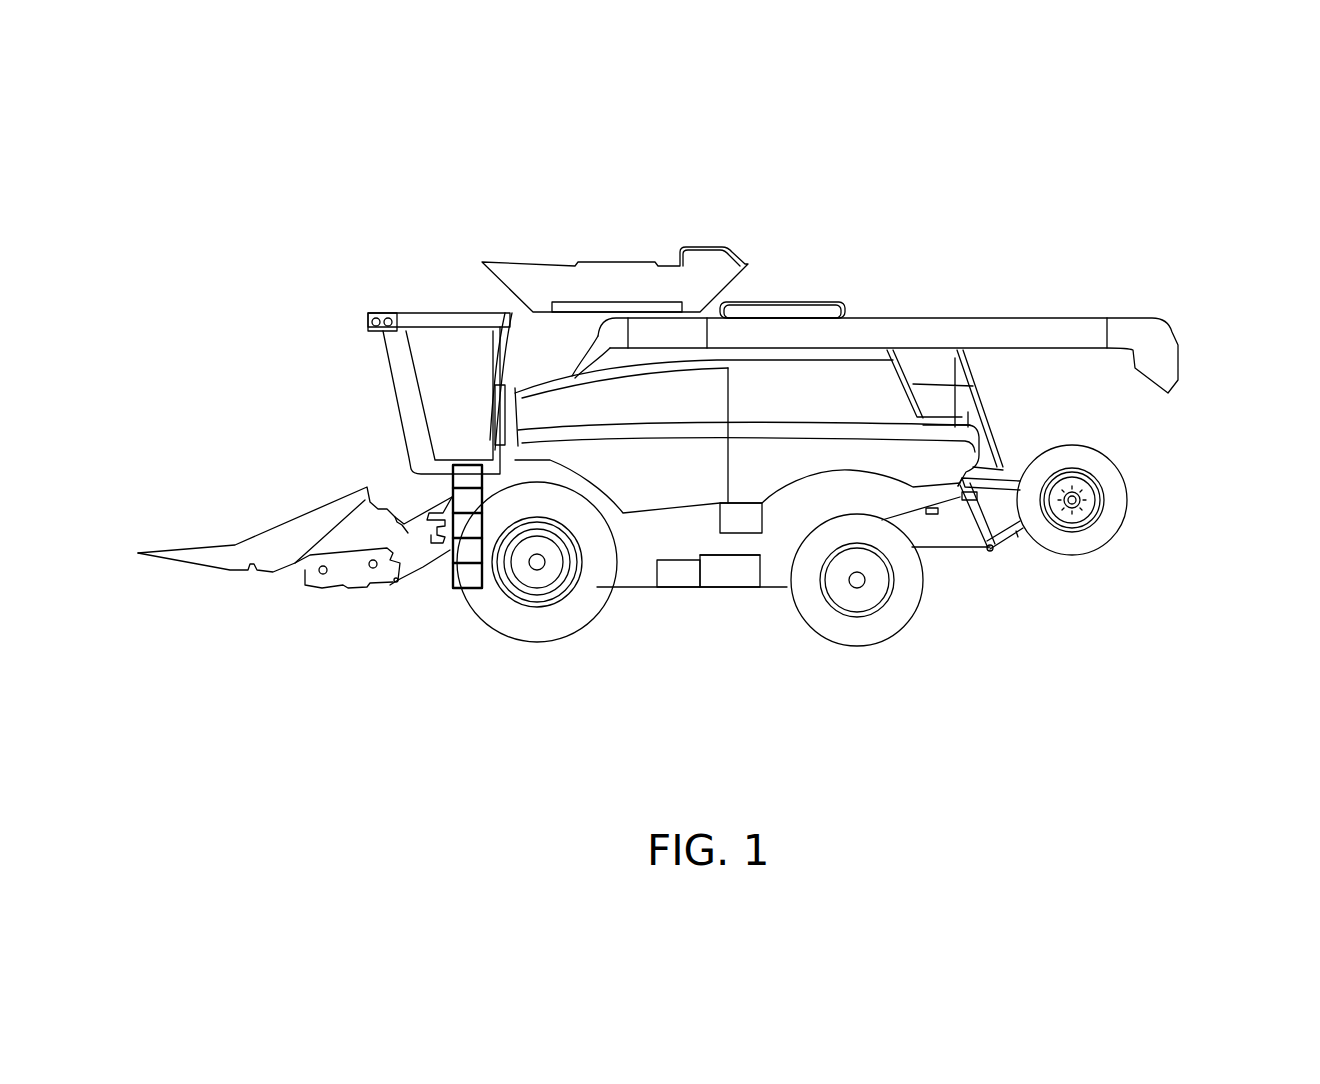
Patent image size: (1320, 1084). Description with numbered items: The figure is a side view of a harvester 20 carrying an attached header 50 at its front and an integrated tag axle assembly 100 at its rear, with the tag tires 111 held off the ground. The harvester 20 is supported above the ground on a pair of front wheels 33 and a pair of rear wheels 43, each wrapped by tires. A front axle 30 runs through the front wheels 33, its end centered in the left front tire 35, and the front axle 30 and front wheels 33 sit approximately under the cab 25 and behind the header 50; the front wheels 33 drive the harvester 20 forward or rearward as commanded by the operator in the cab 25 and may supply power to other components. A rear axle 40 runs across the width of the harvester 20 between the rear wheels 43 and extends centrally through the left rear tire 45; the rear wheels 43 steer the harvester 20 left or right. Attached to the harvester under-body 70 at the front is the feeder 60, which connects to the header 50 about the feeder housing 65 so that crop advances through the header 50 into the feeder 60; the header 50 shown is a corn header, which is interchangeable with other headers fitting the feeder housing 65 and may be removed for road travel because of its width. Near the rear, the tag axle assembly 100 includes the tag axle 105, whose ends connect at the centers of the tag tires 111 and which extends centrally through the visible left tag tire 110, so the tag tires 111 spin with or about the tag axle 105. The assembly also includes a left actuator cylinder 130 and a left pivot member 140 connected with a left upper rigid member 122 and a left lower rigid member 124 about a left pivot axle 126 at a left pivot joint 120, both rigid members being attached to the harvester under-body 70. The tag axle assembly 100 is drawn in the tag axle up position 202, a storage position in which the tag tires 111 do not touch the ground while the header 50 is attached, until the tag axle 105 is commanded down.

The harvester 20 is at (1068, 186).
The cab 25 is at (448, 348).
The front axle 30 is at (510, 598).
The front wheels 33 is at (527, 646).
The left front tire 35 is at (572, 617).
The rear axle 40 is at (857, 585).
The rear wheels 43 is at (831, 662).
The left rear tire 45 is at (817, 637).
The header 50 is at (410, 612).
The feeder 60 is at (331, 500).
The feeder housing 65 is at (408, 532).
The harvester under-body 70 is at (732, 588).
The tag axle assembly 100 is at (1088, 579).
The tag axle 105 is at (1082, 506).
The left tag tire 110 is at (1146, 484).
The tag tires 111 is at (1098, 467).
The left pivot joint 120 is at (985, 563).
The left upper rigid member 122 is at (963, 550).
The left lower rigid member 124 is at (948, 552).
The left pivot axle 126 is at (996, 558).
The left actuator cylinder 130 is at (1015, 478).
The left pivot member 140 is at (1017, 538).
The tag axle up position 202 is at (1186, 493).